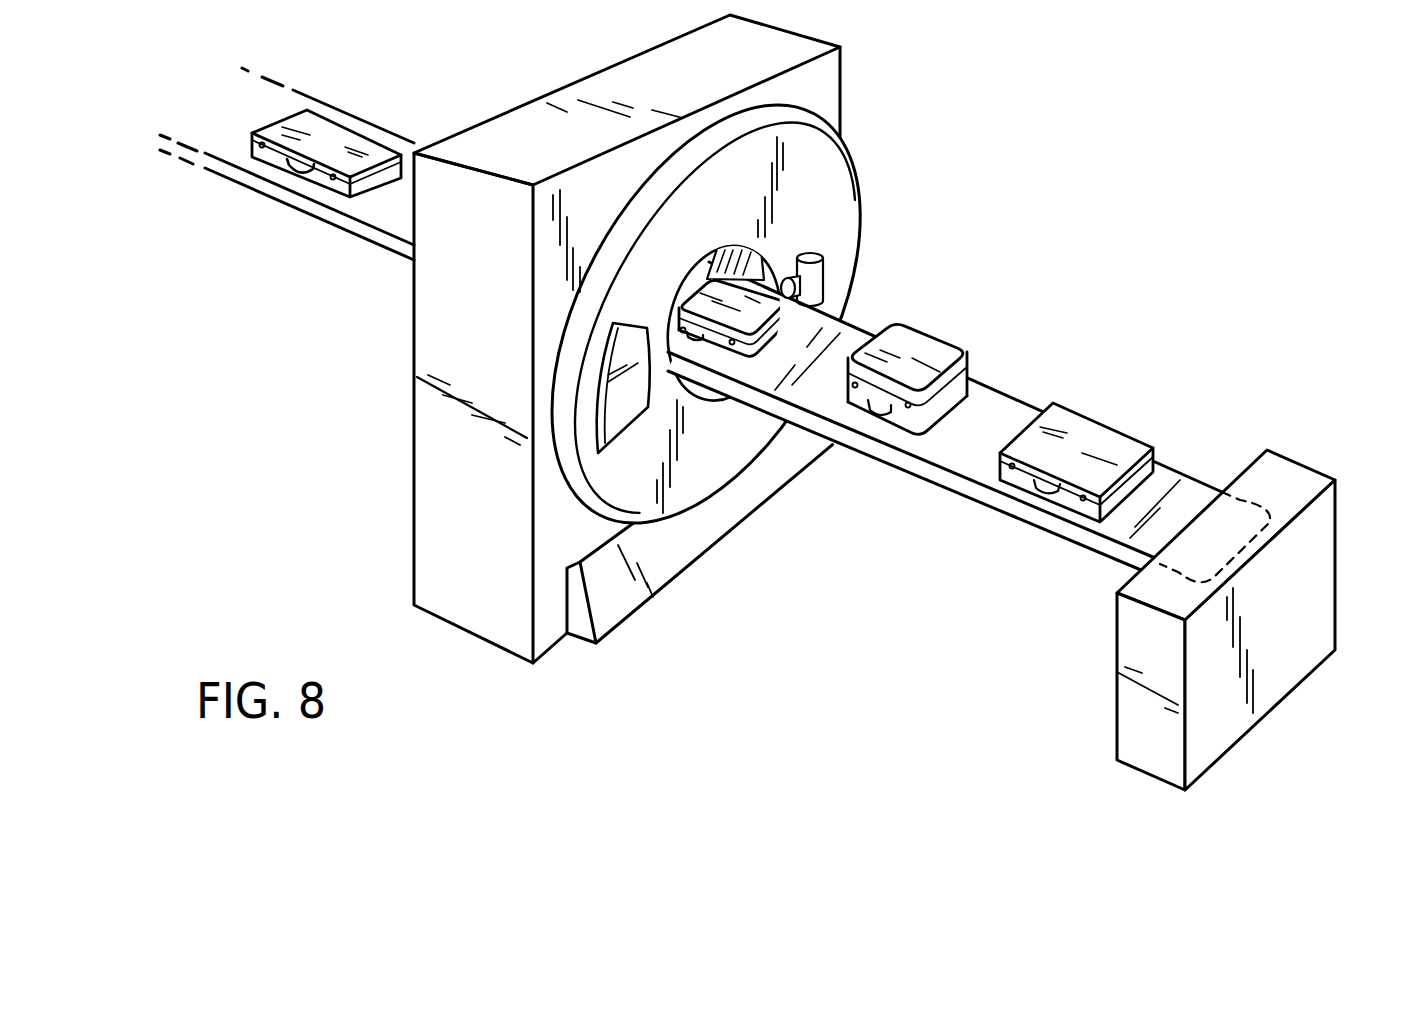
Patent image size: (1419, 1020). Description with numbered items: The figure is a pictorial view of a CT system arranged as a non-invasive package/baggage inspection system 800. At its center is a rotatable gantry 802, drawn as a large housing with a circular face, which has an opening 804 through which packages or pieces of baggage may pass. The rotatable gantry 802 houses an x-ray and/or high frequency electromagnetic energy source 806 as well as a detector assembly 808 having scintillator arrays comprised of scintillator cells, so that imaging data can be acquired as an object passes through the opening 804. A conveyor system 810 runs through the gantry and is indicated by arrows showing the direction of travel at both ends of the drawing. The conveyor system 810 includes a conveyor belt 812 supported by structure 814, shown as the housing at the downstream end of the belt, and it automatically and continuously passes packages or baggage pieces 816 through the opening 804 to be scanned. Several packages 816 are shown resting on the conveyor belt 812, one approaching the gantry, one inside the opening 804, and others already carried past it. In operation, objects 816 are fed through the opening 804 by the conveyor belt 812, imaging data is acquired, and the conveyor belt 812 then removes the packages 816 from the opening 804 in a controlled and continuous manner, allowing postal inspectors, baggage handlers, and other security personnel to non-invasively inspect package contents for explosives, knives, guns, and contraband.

The package/baggage inspection system 800 is at (1118, 203).
The rotatable gantry 802 is at (840, 190).
The opening 804 is at (750, 263).
The x-ray and/or high frequency electromagnetic energy source 806 is at (823, 277).
The detector assembly 808 is at (617, 423).
The conveyor system 810 is at (152, 185).
The conveyor belt 812 is at (367, 213).
The structure 814 is at (1318, 582).
The packages or baggage pieces 816 is at (342, 138).